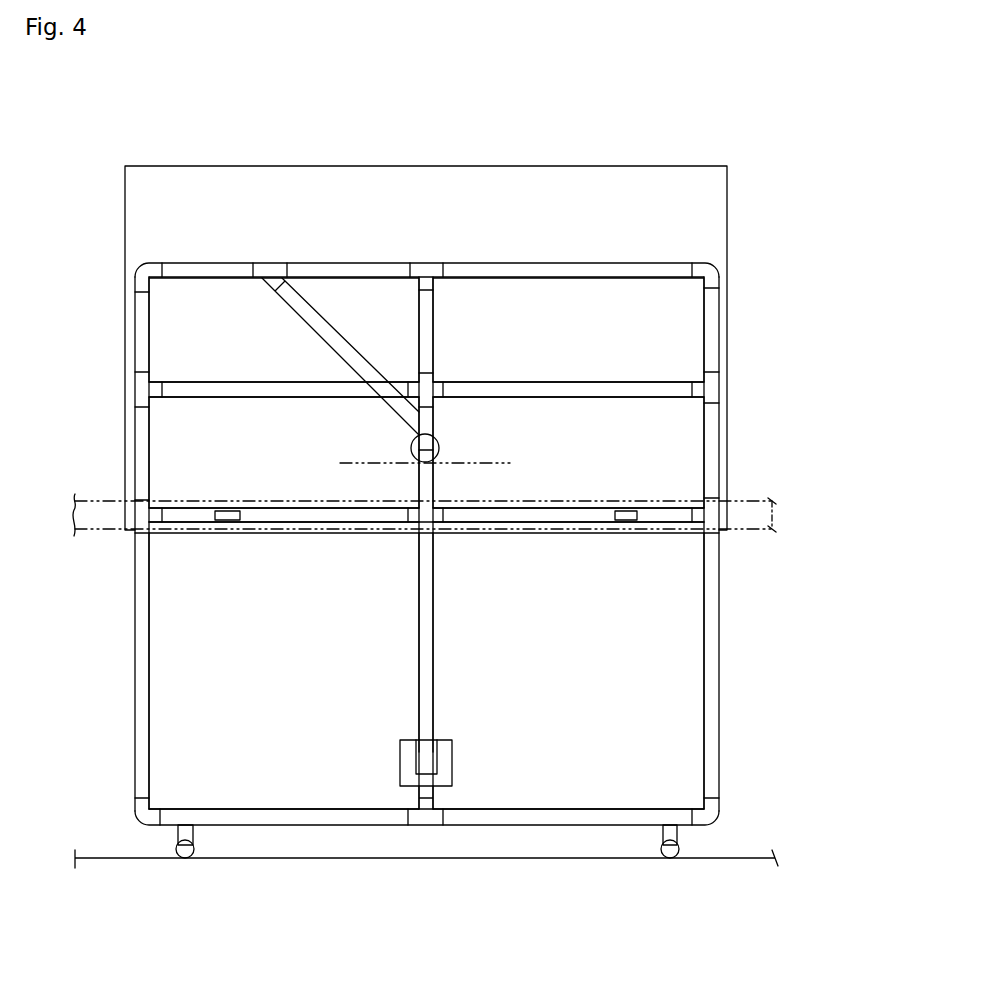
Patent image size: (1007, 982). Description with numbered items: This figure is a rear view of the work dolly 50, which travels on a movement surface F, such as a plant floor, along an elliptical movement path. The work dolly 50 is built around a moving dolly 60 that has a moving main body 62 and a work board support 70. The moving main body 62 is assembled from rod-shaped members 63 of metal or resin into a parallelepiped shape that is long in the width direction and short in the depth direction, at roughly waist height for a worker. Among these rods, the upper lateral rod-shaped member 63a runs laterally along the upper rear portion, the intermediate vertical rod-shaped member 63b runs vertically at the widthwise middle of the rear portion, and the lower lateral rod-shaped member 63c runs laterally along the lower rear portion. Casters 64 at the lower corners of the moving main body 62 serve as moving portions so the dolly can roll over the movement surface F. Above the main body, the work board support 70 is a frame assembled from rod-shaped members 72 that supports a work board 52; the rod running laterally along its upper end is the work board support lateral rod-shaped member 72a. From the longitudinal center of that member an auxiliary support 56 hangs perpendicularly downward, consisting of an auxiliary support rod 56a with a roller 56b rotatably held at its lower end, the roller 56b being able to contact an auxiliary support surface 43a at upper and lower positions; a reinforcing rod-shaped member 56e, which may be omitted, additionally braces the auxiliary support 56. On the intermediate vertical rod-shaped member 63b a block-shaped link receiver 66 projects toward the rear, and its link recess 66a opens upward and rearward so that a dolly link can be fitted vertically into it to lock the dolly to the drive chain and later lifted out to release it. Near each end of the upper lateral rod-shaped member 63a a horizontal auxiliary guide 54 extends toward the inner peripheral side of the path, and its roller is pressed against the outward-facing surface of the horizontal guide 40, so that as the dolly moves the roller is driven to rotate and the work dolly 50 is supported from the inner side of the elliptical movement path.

The work dolly 50 is at (527, 148).
The work board 52 is at (728, 213).
The work board support 70 is at (720, 330).
The rod-shaped member 72 is at (150, 340).
The work board support lateral rod-shaped member 72a is at (528, 271).
The auxiliary support 56 is at (436, 339).
The auxiliary support rod 56a is at (435, 304).
The roller 56b is at (438, 440).
The reinforcing rod-shaped member 56e is at (347, 338).
The auxiliary support surface 43a is at (478, 462).
The horizontal auxiliary guide 54 is at (225, 509).
The moving dolly 60 is at (122, 566).
The moving main body 62 is at (134, 672).
The rod-shaped member 63 is at (150, 658).
The upper lateral rod-shaped member 63a is at (327, 523).
The intermediate vertical rod-shaped member 63b is at (430, 630).
The lower lateral rod-shaped member 63c is at (310, 812).
The link receiver 66 is at (452, 766).
The link recess 66a is at (428, 752).
The caster 64 is at (196, 845).
The horizontal guide 40 is at (753, 531).
The movement surface F is at (745, 856).